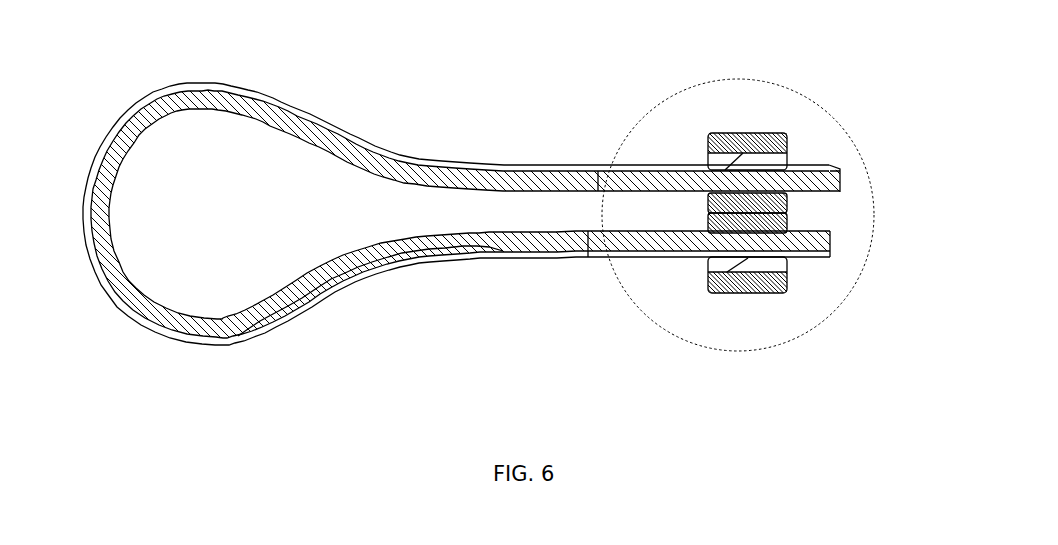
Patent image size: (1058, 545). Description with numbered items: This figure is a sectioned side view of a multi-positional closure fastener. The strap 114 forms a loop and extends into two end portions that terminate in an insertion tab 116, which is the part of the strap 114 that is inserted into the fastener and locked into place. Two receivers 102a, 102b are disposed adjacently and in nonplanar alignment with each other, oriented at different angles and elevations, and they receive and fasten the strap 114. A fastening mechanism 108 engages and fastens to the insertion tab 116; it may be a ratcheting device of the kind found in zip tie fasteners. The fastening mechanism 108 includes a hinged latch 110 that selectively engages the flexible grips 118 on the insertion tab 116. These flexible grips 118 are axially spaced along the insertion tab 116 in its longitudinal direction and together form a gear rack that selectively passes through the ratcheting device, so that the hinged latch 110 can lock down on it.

The strap 114 is at (529, 272).
The receiver 102a is at (708, 158).
The receiver 102b is at (728, 272).
The fastening mechanism 108 is at (788, 136).
The hinged latch 110 is at (790, 154).
The insertion tab 116 is at (841, 186).
The flexible grips 118 is at (832, 167).